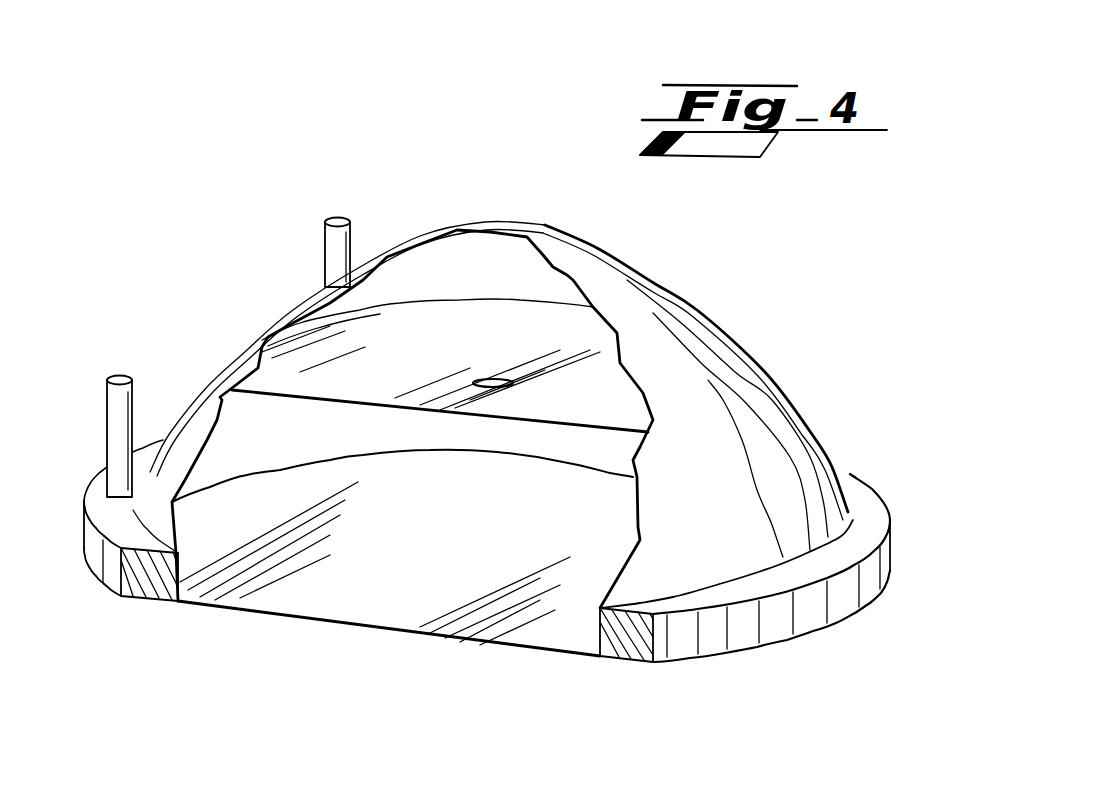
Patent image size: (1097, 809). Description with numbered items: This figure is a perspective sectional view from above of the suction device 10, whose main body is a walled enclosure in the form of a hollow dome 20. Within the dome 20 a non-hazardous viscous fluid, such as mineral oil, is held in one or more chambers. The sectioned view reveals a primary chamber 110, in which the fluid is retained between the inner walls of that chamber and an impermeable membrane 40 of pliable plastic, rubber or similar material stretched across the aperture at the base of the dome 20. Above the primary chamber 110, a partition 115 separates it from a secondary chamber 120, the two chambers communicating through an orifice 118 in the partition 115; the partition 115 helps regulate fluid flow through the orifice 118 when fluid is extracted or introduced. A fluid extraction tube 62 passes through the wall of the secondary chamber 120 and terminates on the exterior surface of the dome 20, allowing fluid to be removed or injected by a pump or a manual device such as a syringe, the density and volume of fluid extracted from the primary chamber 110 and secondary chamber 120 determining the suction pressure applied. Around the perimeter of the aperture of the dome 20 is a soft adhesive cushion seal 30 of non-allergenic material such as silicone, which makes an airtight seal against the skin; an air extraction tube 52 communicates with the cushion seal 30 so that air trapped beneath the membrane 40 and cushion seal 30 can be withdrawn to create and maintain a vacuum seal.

The suction device 10 is at (506, 431).
The dome 20 is at (687, 352).
The cushion seal 30 is at (718, 640).
The membrane 40 is at (478, 542).
The air extraction tube 52 is at (134, 408).
The fluid extraction tube 62 is at (325, 243).
The primary chamber 110 is at (330, 478).
The partition 115 is at (317, 357).
The orifice 118 is at (487, 378).
The secondary chamber 120 is at (522, 276).